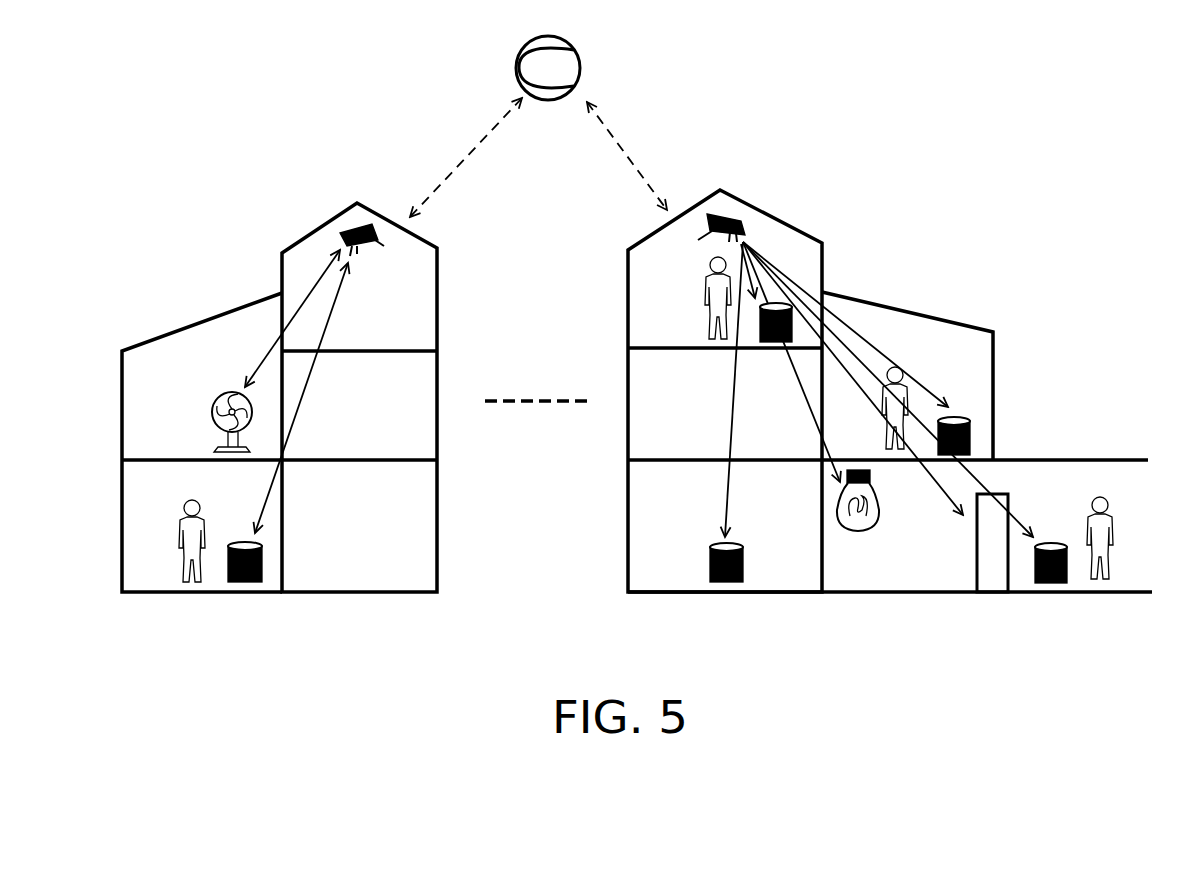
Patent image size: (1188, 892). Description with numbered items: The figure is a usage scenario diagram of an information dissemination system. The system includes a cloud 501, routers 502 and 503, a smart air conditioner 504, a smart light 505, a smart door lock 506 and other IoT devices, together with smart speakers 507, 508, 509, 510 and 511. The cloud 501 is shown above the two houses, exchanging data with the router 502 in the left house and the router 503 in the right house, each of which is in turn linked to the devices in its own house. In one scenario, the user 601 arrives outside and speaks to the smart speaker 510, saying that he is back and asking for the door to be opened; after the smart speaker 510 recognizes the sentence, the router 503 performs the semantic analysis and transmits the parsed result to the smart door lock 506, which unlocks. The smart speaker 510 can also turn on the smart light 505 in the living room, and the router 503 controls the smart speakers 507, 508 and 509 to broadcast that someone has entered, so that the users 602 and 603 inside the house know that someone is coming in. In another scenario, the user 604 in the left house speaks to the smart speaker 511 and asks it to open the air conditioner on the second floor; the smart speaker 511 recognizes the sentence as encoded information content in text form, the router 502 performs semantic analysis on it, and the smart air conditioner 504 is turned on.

The cloud 501 is at (563, 34).
The router 502 is at (352, 232).
The router 503 is at (733, 222).
The smart air conditioner 504 is at (222, 398).
The smart light 505 is at (858, 530).
The smart door lock 506 is at (977, 576).
The smart speaker 507 is at (757, 340).
The smart speaker 508 is at (972, 437).
The smart speaker 509 is at (708, 573).
The smart speaker 510 is at (1032, 572).
The smart speaker 511 is at (262, 567).
The user 601 is at (1115, 528).
The user 602 is at (888, 440).
The user 603 is at (706, 292).
The user 604 is at (180, 540).